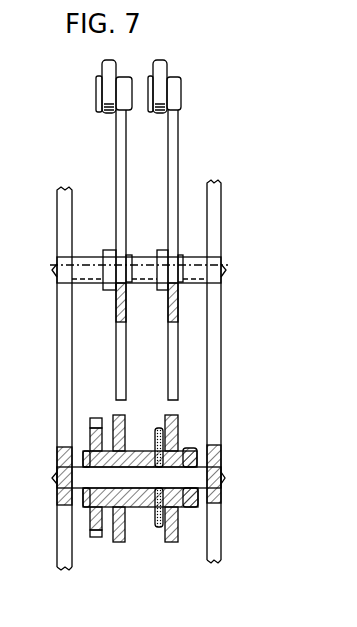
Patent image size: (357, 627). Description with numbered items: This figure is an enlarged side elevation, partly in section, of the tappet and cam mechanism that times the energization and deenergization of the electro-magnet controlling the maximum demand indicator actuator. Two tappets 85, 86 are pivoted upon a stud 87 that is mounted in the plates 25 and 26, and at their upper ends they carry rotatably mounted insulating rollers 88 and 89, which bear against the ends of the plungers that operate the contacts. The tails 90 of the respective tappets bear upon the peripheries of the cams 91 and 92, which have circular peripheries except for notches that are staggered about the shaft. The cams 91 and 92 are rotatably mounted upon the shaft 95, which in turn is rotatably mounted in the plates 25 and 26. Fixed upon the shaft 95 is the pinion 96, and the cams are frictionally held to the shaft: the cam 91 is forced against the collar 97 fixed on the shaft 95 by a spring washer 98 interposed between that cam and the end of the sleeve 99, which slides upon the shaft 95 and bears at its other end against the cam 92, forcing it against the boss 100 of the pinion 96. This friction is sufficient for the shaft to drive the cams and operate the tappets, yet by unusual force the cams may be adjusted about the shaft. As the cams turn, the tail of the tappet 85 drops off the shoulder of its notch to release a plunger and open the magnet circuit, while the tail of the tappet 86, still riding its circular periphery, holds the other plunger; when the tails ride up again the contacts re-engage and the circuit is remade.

The plate 25 is at (58, 216).
The plate 26 is at (221, 205).
The tappet 85 is at (178, 172).
The tappet 86 is at (116, 178).
The stud 87 is at (141, 258).
The insulating roller 88 is at (157, 126).
The insulating roller 89 is at (104, 118).
The tails 90 is at (116, 344).
The cam 91 is at (172, 545).
The cam 92 is at (122, 545).
The shaft 95 is at (194, 476).
The pinion 96 is at (96, 540).
The collar 97 is at (191, 450).
The spring washer 98 is at (156, 423).
The sleeve 99 is at (148, 507).
The boss 100 is at (84, 500).